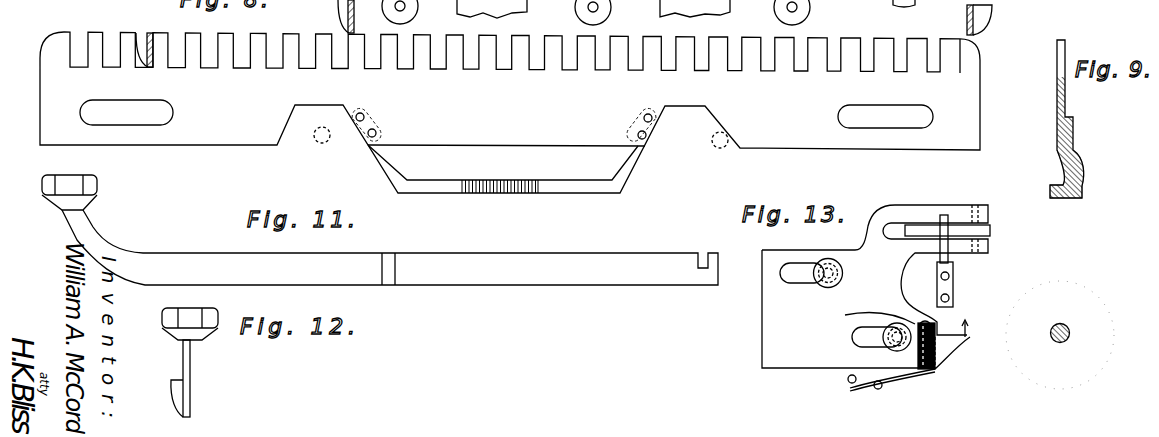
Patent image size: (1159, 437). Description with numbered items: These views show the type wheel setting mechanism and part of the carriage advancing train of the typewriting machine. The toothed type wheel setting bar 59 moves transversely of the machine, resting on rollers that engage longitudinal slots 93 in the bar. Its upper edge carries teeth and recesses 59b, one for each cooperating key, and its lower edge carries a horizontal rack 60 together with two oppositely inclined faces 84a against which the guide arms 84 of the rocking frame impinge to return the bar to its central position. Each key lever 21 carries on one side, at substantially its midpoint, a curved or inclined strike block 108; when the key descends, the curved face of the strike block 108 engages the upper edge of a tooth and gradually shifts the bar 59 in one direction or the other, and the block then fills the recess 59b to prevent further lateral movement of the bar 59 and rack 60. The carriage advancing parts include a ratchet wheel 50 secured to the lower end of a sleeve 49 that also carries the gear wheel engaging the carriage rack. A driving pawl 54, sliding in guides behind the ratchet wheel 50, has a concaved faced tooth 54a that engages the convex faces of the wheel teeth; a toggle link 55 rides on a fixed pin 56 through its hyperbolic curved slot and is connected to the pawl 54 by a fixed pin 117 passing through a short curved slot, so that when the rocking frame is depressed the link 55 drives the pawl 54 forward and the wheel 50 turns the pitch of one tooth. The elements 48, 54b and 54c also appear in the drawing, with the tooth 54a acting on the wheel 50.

In FIG. 8, the key lever 21 is at (965, 19).
In FIG. 11, the key lever 21 is at (380, 230).
In FIG. 12, the key lever 21 is at (190, 362).
In FIG. 13, the toothed wheel 48 is at (1052, 335).
In FIG. 13, the sleeve 49 is at (1069, 331).
In FIG. 13, the ratchet wheel 50 is at (1060, 335).
In FIG. 13, the driving pawl 54 is at (875, 287).
In FIG. 13, the concaved faced tooth 54a is at (955, 348).
In FIG. 13, the spring 54b is at (891, 384).
In FIG. 13, the lever portion 54c is at (868, 316).
In FIG. 13, the toggle link 55 is at (992, 230).
In FIG. 13, the pin 56 is at (949, 261).
In FIG. 8, the type wheel setting bar 59 is at (510, 112).
In FIG. 9, the type wheel setting bar 59 is at (1057, 106).
In FIG. 8, the recesses 59b is at (397, 53).
In FIG. 8, the rack 60 is at (503, 179).
In FIG. 9, the rack 60 is at (1081, 174).
In FIG. 8, the guide arms 84 is at (720, 148).
In FIG. 8, the inclined faces 84a is at (733, 113).
In FIG. 8, the longitudinal slots 93 is at (173, 110).
In FIG. 8, the strike block 108 is at (136, 34).
In FIG. 11, the strike block 108 is at (391, 260).
In FIG. 12, the strike block 108 is at (171, 388).
In FIG. 13, the fixed pin 117 is at (988, 208).